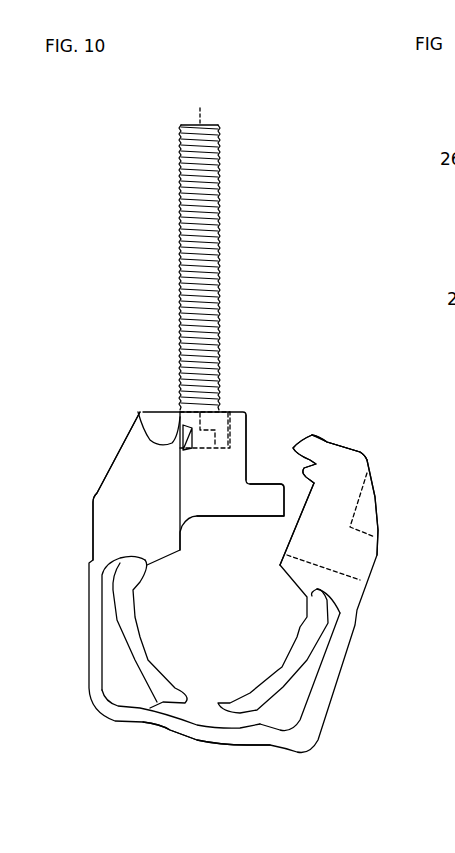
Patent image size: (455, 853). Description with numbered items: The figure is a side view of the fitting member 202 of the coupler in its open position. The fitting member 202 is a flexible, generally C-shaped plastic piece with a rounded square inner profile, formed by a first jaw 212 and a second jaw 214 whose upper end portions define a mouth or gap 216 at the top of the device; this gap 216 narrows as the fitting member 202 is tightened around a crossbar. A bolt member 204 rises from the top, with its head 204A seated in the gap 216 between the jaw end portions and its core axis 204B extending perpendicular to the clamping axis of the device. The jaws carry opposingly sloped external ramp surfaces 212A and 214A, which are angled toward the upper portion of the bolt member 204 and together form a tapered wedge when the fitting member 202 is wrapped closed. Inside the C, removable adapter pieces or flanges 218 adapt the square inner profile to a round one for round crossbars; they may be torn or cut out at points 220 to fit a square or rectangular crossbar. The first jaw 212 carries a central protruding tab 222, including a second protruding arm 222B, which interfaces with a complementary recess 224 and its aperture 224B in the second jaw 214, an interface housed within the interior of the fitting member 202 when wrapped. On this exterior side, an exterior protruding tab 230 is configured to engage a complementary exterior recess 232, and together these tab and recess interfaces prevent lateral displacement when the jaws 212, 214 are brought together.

The fitting member 202 is at (87, 300).
The bolt member 204 is at (217, 245).
The head 204A is at (238, 447).
The core axis 204B is at (203, 113).
The first jaw 212 is at (88, 598).
The external ramp surface 212A is at (110, 467).
The second jaw 214 is at (350, 637).
The external ramp surface 214A is at (375, 505).
The mouth or gap 216 is at (298, 410).
The adapter pieces or removable flanges 218 is at (163, 702).
The tear points 220 is at (147, 563).
The central protruding tab 222 is at (253, 445).
The second protruding arm 222B is at (273, 518).
The recess 224 is at (337, 467).
The complementary aperture 224B is at (348, 553).
The exterior protruding tab 230 is at (153, 440).
The exterior recess 232 is at (313, 430).